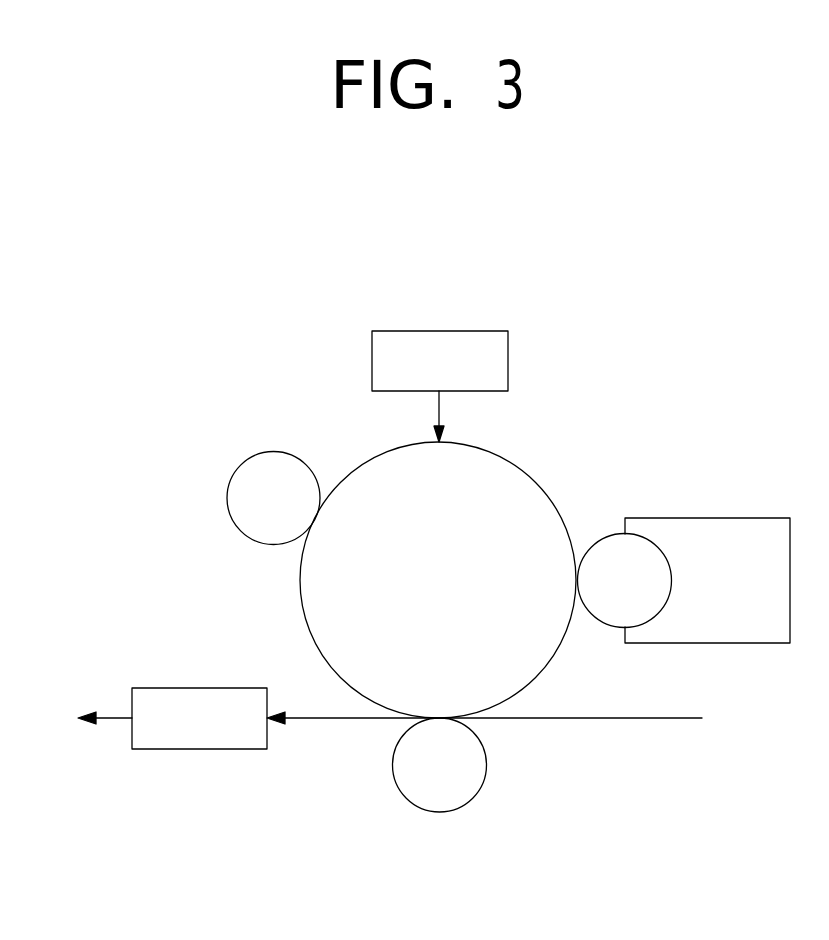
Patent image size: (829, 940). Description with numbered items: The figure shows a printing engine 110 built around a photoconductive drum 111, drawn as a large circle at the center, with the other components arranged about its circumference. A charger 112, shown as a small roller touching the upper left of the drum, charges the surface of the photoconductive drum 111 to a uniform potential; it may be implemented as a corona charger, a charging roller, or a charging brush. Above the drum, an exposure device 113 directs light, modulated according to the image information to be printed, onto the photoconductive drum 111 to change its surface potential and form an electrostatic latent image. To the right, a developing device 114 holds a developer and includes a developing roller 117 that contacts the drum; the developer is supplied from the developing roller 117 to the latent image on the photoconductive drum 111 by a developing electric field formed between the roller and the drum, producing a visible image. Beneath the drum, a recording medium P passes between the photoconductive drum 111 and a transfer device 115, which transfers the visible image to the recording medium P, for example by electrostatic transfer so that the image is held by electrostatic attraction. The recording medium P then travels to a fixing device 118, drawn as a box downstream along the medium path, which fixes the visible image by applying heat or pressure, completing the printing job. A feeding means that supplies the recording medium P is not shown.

The printing engine 110 is at (465, 222).
The photoconductive drum 111 is at (505, 458).
The charger 112 is at (273, 451).
The exposure device 113 is at (440, 331).
The developing device 114 is at (707, 518).
The transfer device 115 is at (487, 765).
The developing roller 117 is at (594, 540).
The fixing device 118 is at (198, 688).
The recording medium P is at (312, 721).